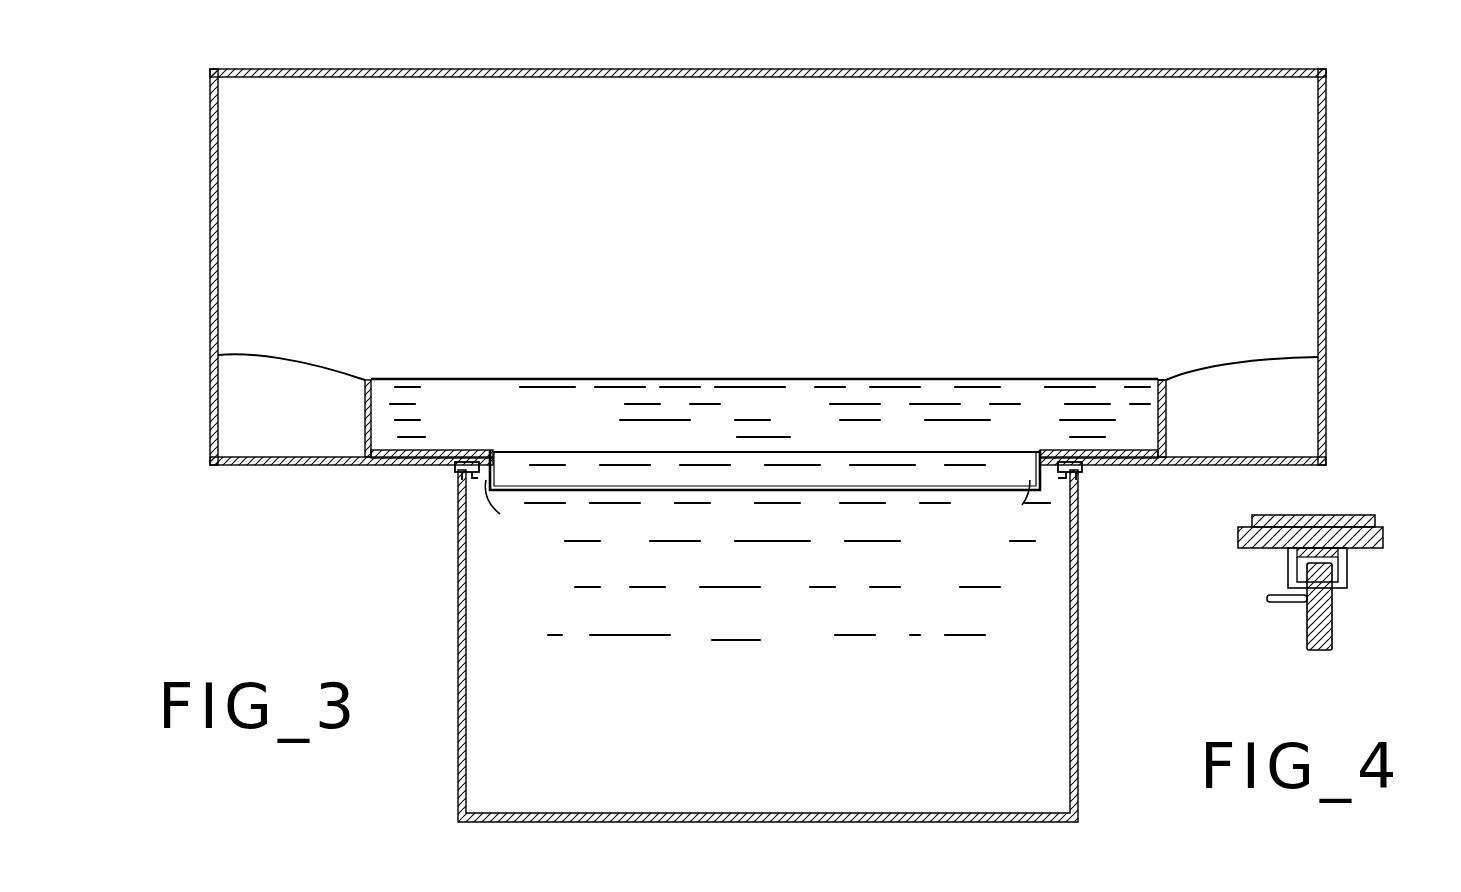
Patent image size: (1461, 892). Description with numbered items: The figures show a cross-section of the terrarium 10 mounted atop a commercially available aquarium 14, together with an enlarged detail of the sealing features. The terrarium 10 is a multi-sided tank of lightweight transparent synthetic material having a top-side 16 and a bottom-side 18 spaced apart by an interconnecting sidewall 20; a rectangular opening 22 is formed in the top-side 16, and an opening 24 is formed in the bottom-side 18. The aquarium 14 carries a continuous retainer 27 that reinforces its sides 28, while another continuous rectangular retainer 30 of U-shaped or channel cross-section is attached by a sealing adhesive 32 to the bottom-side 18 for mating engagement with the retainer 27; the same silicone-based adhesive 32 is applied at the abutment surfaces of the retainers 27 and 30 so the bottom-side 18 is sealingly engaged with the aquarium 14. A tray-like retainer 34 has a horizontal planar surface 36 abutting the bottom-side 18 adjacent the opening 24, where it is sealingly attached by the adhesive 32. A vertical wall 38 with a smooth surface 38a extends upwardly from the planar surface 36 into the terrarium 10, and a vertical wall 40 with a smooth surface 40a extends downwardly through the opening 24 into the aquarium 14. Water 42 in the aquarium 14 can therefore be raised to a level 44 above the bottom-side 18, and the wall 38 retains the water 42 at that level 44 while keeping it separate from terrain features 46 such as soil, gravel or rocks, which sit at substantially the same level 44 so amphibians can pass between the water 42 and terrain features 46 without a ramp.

In FIG. 3, the terrarium 10 is at (196, 194).
In FIG. 3, the aquarium 14 is at (444, 611).
In FIG. 3, the top-side 16 is at (282, 70).
In FIG. 3, the bottom-side 18 is at (305, 468).
In FIG. 4, the bottom-side 18 is at (1250, 550).
In FIG. 3, the sidewall 20 is at (196, 296).
In FIG. 3, the rectangular opening 22 is at (372, 70).
In FIG. 3, the opening 24 is at (493, 462).
In FIG. 4, the continuous retainer 27 is at (1280, 604).
In FIG. 3, the sides 28 is at (456, 722).
In FIG. 4, the sides 28 is at (1335, 635).
In FIG. 3, the continuous rectangular retainer 30 is at (455, 470).
In FIG. 4, the continuous rectangular retainer 30 is at (1348, 575).
In FIG. 3, the sealing adhesive 32 is at (1166, 453).
In FIG. 4, the sealing adhesive 32 is at (1370, 520).
In FIG. 3, the retainer 34 is at (348, 410).
In FIG. 3, the planar surface 36 is at (430, 450).
In FIG. 4, the planar surface 36 is at (1325, 515).
In FIG. 3, the vertical wall 38 is at (1166, 411).
In FIG. 3, the smooth surface 38a is at (1155, 398).
In FIG. 3, the vertical wall 40 is at (490, 500).
In FIG. 3, the smooth surface 40a is at (1020, 484).
In FIG. 3, the water 42 is at (770, 513).
In FIG. 3, the level 44 is at (650, 378).
In FIG. 3, the terrain features 46 is at (290, 358).